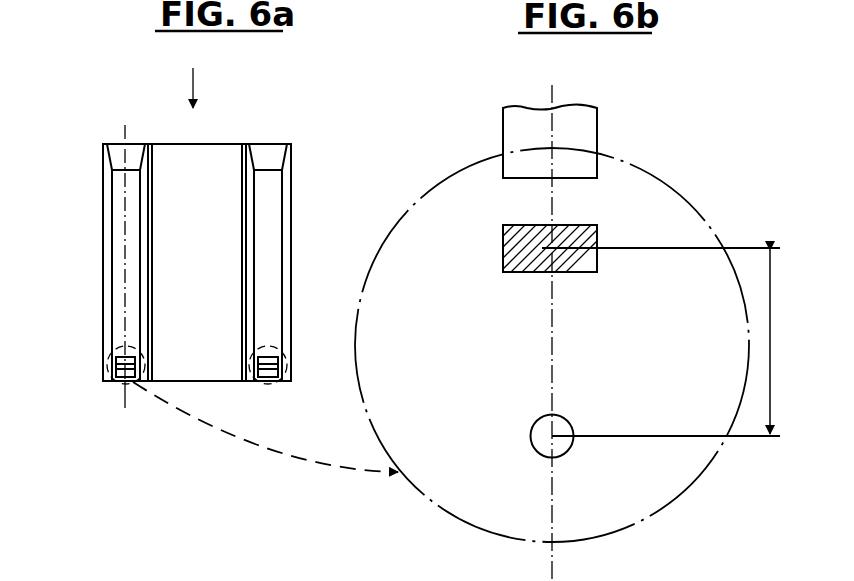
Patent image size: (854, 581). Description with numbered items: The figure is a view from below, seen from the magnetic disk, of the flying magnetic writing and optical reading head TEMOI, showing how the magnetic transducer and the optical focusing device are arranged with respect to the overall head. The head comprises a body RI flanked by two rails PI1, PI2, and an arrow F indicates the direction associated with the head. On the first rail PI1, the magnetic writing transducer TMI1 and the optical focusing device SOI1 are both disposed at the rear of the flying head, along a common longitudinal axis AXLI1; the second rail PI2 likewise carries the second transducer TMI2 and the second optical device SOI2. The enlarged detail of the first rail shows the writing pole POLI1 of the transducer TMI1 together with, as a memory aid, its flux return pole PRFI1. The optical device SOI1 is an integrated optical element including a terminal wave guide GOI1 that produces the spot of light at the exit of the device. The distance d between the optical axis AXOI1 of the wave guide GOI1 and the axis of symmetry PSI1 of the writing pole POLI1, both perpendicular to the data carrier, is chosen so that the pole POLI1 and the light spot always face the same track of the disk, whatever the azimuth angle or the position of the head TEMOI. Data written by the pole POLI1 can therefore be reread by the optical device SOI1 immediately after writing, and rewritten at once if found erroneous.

In FIG. 6a, the ring body RI is at (208, 143).
In FIG. 6a, the flying magnetic writing and optical reading head TEMOI is at (304, 146).
In FIG. 6a, the rail PI1 is at (117, 202).
In FIG. 6a, the rail PI2 is at (274, 202).
In FIG. 6a, the common longitudinal axis AXLI1 is at (125, 125).
In FIG. 6a, the force direction F is at (202, 88).
In FIG. 6a, the magnetic writing transducer TMI1 is at (117, 363).
In FIG. 6a, the magnetic writing transducer TMI2 is at (280, 360).
In FIG. 6a, the optical focusing device SOI1 is at (118, 382).
In FIG. 6a, the optical focusing device SOI2 is at (272, 385).
In FIG. 6b, the axis of symmetry of the writing pole PSI1 is at (738, 247).
In FIG. 6b, the optical axis of the wave guide AXOI1 is at (549, 434).
In FIG. 6b, the flux return pole PRFI1 is at (590, 123).
In FIG. 6b, the writing pole POLI1 is at (590, 233).
In FIG. 6b, the terminal wave guide GOI1 is at (537, 457).
In FIG. 6b, the distance d is at (780, 342).